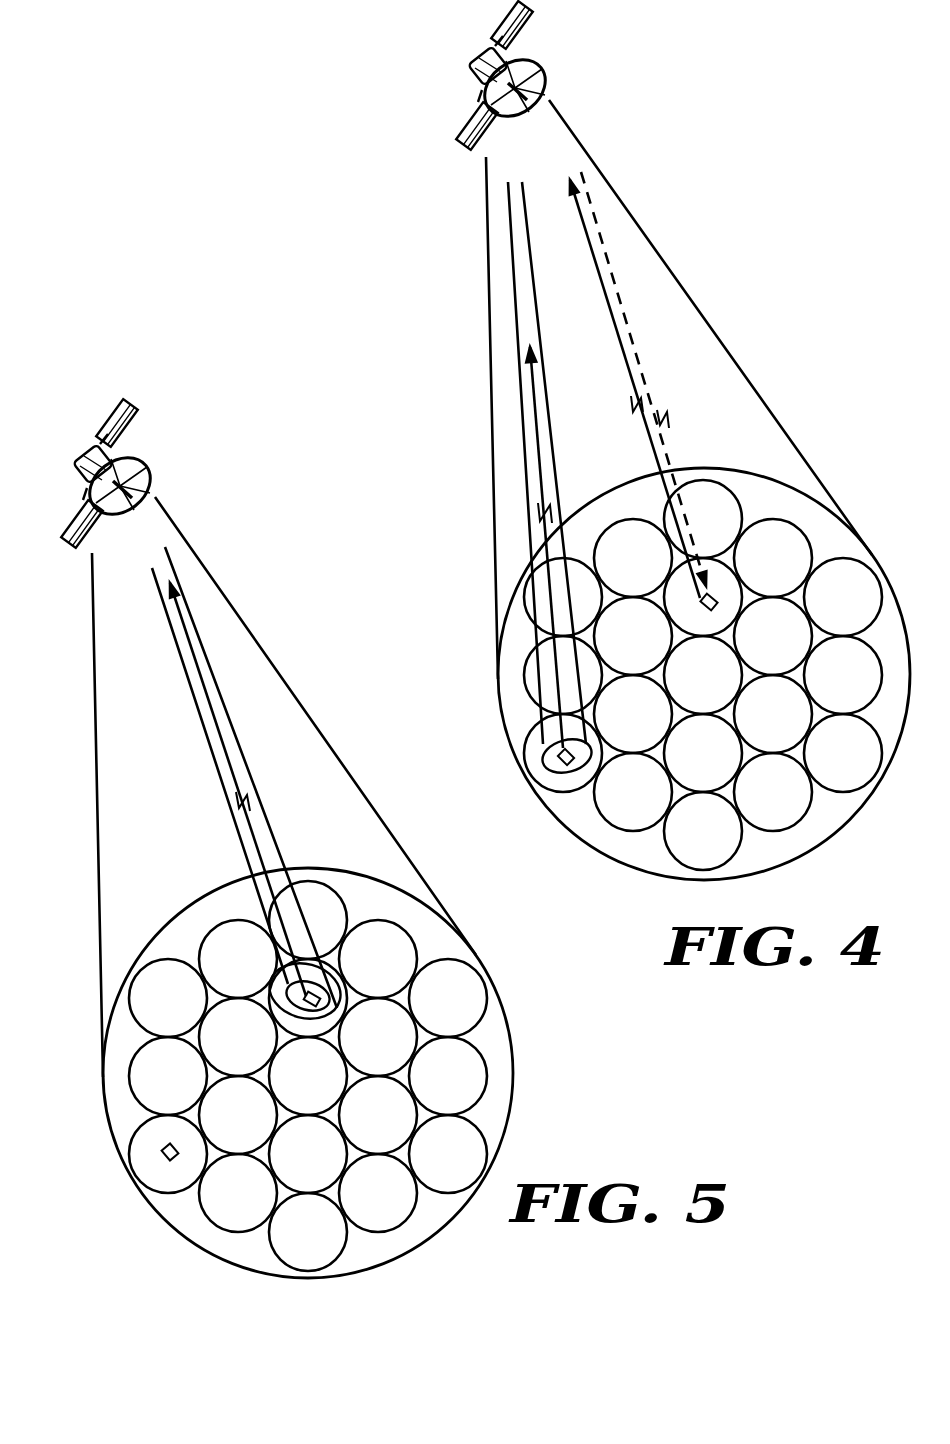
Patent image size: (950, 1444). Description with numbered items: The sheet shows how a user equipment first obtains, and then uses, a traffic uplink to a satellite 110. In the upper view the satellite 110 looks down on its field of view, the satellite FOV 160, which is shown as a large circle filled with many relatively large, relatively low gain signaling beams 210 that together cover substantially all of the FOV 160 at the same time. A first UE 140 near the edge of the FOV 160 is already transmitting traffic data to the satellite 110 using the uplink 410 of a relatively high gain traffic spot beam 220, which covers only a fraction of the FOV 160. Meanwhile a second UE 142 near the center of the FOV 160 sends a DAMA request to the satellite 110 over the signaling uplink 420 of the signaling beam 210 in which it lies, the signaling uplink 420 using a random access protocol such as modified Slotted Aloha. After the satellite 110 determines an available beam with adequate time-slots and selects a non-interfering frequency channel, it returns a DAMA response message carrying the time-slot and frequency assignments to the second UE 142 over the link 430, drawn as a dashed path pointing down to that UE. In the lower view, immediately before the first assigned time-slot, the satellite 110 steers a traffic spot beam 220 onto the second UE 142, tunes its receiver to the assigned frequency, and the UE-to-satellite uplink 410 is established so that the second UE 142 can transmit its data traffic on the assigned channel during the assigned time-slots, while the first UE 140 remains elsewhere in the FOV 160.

In FIG. 4, the satellite 110 is at (500, 33).
In FIG. 5, the satellite 110 is at (106, 431).
In FIG. 4, the first UE 140 is at (543, 767).
In FIG. 5, the first UE 140 is at (162, 1152).
In FIG. 5, the second UE 142 is at (337, 1010).
In FIG. 4, the satellite FOV 160 is at (824, 838).
In FIG. 5, the satellite FOV 160 is at (428, 1236).
In FIG. 4, the signaling beam 210 is at (713, 628).
In FIG. 5, the signaling beam 210 is at (311, 1030).
In FIG. 4, the traffic uplink spot beam 220 is at (556, 482).
In FIG. 5, the traffic uplink spot beam 220 is at (282, 852).
In FIG. 4, the uplink 410 is at (540, 433).
In FIG. 5, the uplink 410 is at (203, 686).
In FIG. 4, the signaling uplink 420 is at (605, 290).
In FIG. 4, the link 430 is at (658, 422).